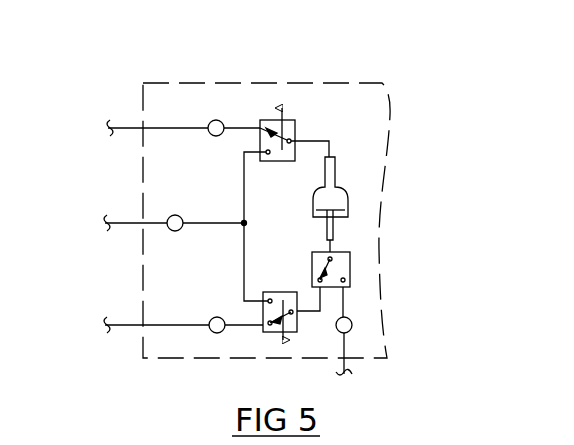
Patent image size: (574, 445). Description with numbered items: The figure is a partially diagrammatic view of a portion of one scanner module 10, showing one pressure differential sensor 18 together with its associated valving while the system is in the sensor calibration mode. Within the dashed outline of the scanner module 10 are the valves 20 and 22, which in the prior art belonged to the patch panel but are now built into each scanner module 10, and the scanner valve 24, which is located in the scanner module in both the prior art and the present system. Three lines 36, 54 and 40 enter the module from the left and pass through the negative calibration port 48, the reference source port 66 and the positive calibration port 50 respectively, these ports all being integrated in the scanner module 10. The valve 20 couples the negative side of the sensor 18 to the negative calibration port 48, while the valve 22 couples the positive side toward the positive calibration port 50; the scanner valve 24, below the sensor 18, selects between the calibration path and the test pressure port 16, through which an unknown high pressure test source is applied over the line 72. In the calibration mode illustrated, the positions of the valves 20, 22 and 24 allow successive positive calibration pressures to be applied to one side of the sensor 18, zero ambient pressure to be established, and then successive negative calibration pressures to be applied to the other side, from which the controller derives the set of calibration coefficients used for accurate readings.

The scanner module 10 is at (142, 84).
The test pressure port 16 is at (352, 320).
The differential pressure sensor 18 is at (348, 197).
The valve 20 is at (296, 124).
The valve 22 is at (272, 333).
The scanner valve 24 is at (350, 271).
The first input line 36 is at (128, 127).
The second input line 40 is at (135, 325).
The negative calibration port 48 is at (210, 121).
The positive calibration port 50 is at (212, 316).
The third input line 54 is at (135, 223).
The reference source port 66 is at (180, 216).
The test pressure source line 72 is at (345, 347).